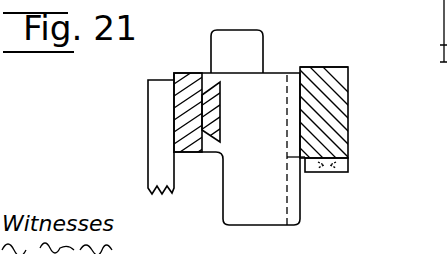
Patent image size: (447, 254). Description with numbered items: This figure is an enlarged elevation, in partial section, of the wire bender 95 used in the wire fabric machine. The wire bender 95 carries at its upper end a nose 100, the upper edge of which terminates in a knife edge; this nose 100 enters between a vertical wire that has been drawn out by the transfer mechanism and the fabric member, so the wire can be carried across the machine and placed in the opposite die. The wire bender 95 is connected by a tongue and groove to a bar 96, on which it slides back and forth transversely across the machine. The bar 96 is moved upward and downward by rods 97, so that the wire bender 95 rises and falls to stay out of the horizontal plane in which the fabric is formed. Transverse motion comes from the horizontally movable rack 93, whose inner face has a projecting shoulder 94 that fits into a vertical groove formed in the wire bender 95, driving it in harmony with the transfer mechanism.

The nose 100 is at (240, 27).
The bar 96 is at (190, 76).
The rods 97 is at (147, 115).
The wire bender 95 is at (223, 203).
The rack 93 is at (347, 128).
The projecting shoulder 94 is at (298, 63).